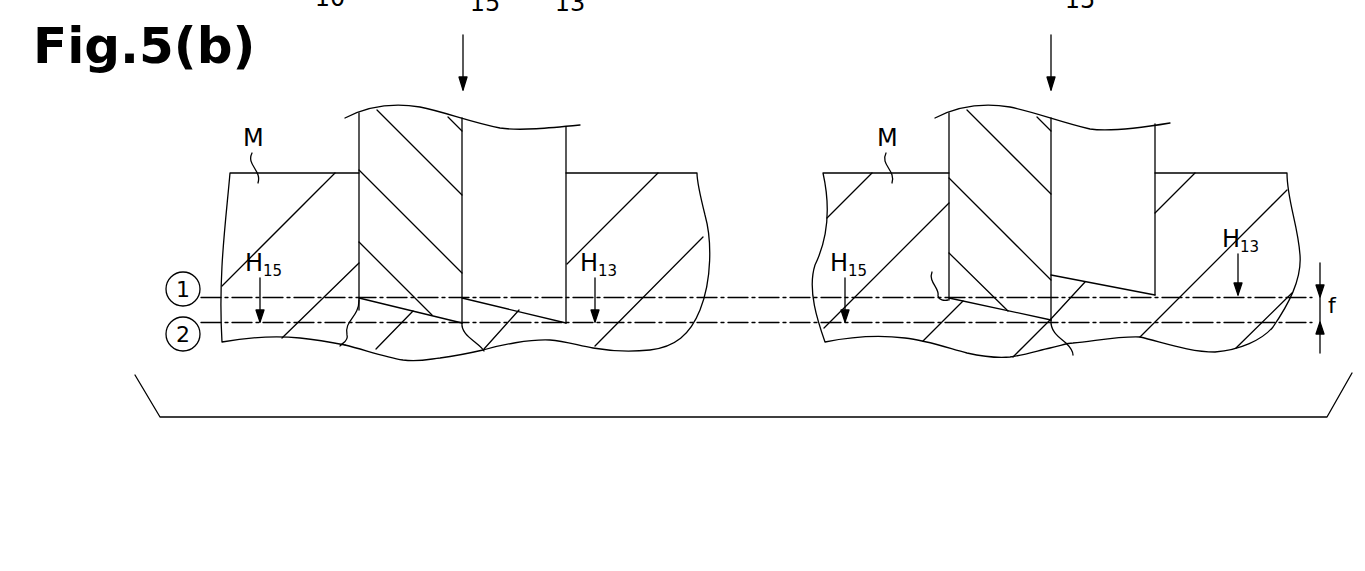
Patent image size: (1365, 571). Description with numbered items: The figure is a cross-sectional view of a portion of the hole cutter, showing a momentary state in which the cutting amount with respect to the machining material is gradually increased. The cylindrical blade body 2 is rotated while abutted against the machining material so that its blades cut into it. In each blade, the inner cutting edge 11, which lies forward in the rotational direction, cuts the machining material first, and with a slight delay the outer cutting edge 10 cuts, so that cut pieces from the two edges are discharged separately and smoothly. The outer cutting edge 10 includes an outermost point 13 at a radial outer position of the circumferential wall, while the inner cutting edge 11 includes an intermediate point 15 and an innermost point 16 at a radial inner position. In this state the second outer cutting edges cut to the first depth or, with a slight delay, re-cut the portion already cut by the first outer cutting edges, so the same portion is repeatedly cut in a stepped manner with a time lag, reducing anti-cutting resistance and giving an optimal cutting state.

The blade body 2 is at (514, 128).
The outer cutting edge 10 is at (508, 311).
The inner cutting edge 11 is at (402, 312).
The outermost point 13 is at (566, 323).
The intermediate point 15 is at (725, 252).
The innermost point 16 is at (630, 312).